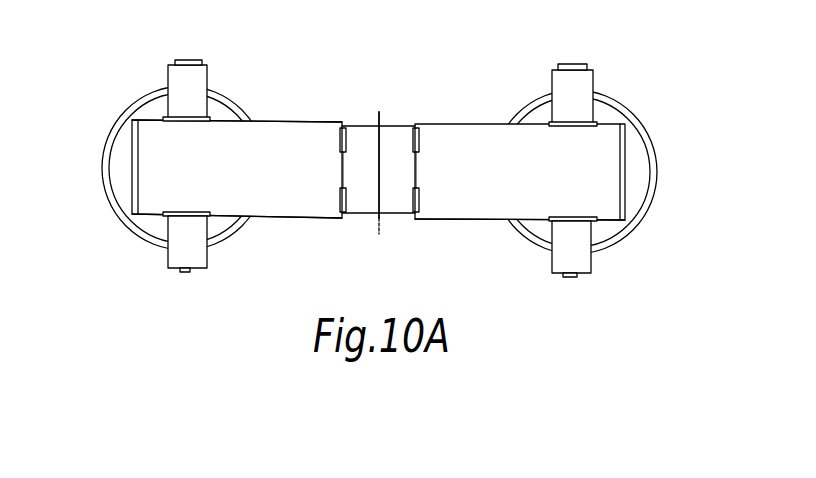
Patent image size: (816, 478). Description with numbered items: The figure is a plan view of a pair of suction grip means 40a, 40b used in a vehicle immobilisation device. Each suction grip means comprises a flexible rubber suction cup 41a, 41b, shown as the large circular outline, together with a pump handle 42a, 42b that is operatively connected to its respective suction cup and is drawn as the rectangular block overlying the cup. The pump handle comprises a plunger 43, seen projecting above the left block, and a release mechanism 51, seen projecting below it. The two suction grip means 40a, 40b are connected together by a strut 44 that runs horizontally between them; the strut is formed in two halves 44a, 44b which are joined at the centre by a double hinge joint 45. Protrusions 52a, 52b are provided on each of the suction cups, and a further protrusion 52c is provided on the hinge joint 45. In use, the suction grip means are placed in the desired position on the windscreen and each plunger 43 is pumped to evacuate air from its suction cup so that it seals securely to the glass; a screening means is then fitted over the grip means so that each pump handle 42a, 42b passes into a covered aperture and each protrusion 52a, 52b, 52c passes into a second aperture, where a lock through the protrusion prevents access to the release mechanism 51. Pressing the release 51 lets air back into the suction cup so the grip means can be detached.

The suction grip means 40a is at (158, 195).
The suction grip means 40b is at (604, 194).
The suction cup 41a is at (113, 121).
The suction cup 41b is at (642, 120).
The pump handle 42a is at (190, 200).
The pump handle 42b is at (575, 204).
The plunger 43 is at (207, 66).
The strut 44 is at (303, 122).
The strut half 44a is at (307, 218).
The strut half 44b is at (468, 219).
The double hinge joint 45 is at (396, 218).
The release mechanism 51 is at (185, 273).
The protrusion 52a is at (130, 165).
The protrusion 52b is at (623, 182).
The protrusion 52c is at (381, 127).